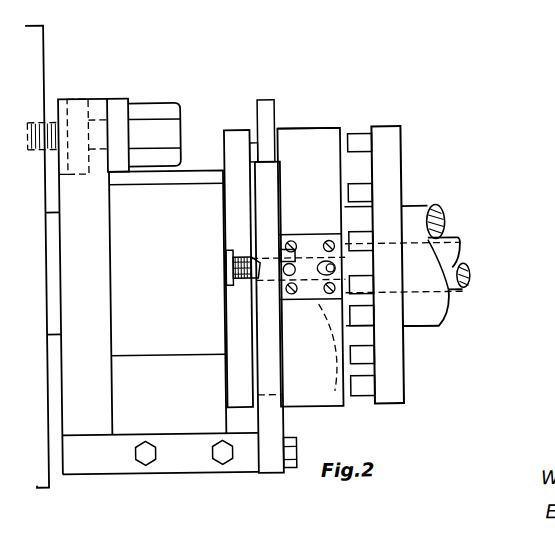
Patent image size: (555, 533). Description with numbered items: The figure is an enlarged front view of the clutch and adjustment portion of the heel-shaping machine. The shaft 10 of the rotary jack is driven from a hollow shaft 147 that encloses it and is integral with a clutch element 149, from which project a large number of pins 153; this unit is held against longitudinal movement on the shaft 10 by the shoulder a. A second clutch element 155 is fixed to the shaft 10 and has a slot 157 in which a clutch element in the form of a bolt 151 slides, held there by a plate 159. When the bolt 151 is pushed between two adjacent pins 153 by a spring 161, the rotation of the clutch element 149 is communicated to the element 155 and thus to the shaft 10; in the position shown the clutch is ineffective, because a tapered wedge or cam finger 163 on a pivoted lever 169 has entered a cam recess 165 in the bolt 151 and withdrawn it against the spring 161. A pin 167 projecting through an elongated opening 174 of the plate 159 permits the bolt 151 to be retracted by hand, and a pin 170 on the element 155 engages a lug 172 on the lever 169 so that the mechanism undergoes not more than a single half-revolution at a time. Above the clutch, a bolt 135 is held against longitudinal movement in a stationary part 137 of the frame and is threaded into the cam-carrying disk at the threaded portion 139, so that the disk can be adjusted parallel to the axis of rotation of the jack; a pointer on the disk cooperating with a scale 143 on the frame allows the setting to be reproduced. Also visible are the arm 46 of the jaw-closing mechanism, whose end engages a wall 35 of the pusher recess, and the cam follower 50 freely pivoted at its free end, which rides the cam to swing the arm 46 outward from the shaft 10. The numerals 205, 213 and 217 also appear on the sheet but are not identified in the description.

The shaft 10 is at (457, 247).
The wall 35 is at (37, 57).
The arm 46 is at (262, 0).
The cam follower 50 is at (285, 0).
The bolt 135 is at (153, 107).
The stationary part of the frame 137 is at (98, 100).
The threaded portion 139 is at (33, 117).
The scale 143 is at (385, 18).
The shaft 147 is at (430, 328).
The clutch element 149 is at (396, 178).
The clutch element 151 is at (335, 268).
The pins 153 is at (362, 233).
The clutch element 155 is at (307, 147).
The slot 157 is at (338, 353).
The plate 159 is at (303, 247).
The spring 161 is at (240, 255).
The cam finger 163 is at (250, 278).
The cam recess 165 is at (290, 235).
The pin 167 is at (392, 255).
The lever 169 is at (265, 352).
The pin 170 is at (305, 300).
The lug 172 is at (250, 278).
The elongated opening 174 is at (370, 274).
The rod 205 is at (257, 145).
The lever 213 is at (520, 5).
The link 217 is at (468, 20).
The shoulder a is at (305, 235).